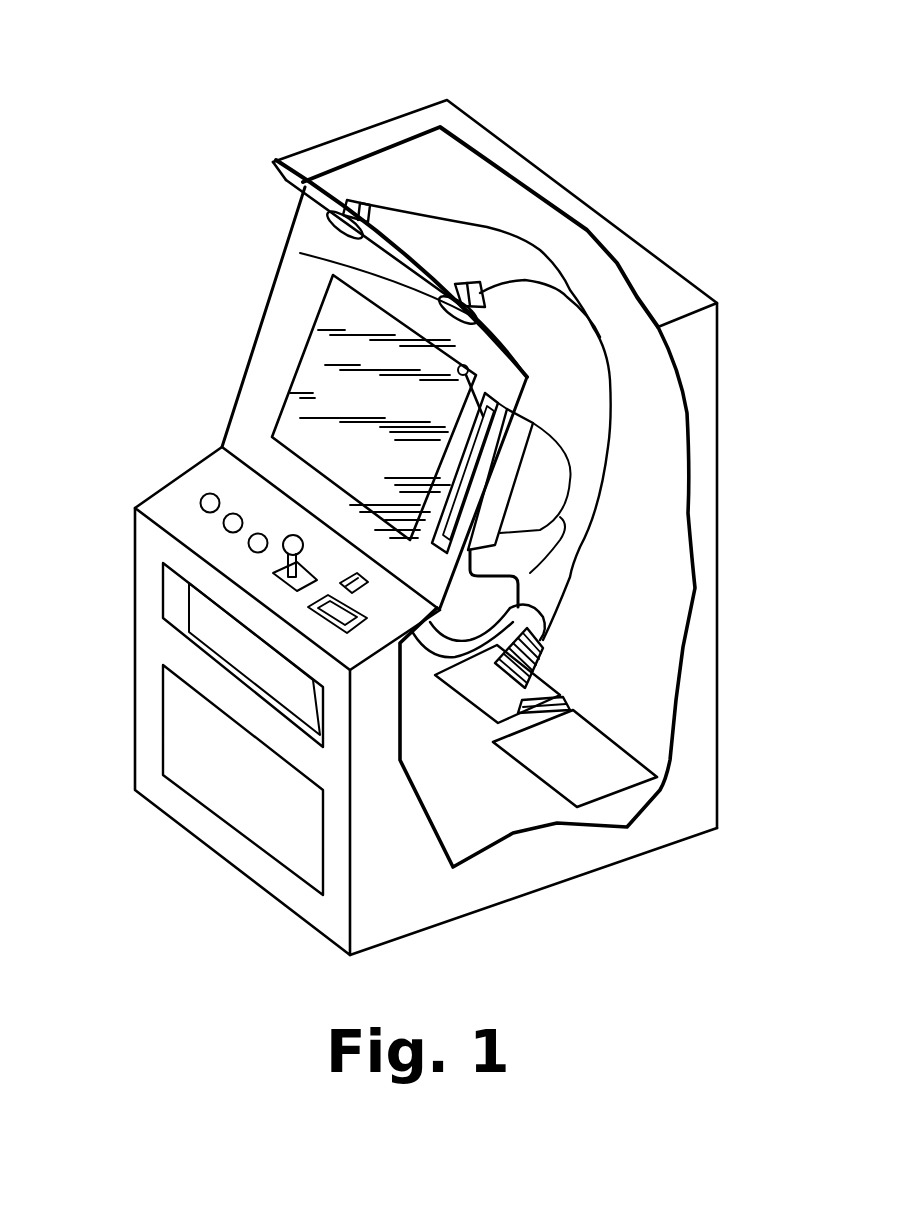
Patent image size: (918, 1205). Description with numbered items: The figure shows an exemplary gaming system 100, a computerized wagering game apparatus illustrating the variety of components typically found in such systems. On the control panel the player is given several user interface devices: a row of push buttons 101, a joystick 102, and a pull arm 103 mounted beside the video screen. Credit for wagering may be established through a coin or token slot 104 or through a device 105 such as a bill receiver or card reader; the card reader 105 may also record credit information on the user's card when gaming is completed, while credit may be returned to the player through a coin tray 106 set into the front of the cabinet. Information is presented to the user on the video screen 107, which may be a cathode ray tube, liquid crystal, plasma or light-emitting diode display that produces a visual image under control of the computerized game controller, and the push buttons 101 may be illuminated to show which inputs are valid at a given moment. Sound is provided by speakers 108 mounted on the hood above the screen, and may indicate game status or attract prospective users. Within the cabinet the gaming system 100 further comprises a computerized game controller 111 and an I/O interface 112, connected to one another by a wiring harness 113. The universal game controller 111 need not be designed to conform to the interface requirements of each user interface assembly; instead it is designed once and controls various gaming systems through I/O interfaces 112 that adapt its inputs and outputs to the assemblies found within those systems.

The gaming system 100 is at (478, 120).
The push buttons 101 is at (178, 507).
The joystick 102 is at (283, 575).
The pull arm 103 is at (478, 415).
The coin or token slot 104 is at (343, 586).
The card reader 105 is at (323, 619).
The coin tray 106 is at (306, 700).
The video screen 107 is at (330, 357).
The speakers 108 is at (300, 253).
The computerized game controller 111 is at (637, 757).
The I/O interface 112 is at (535, 692).
The wiring harness 113 is at (543, 655).